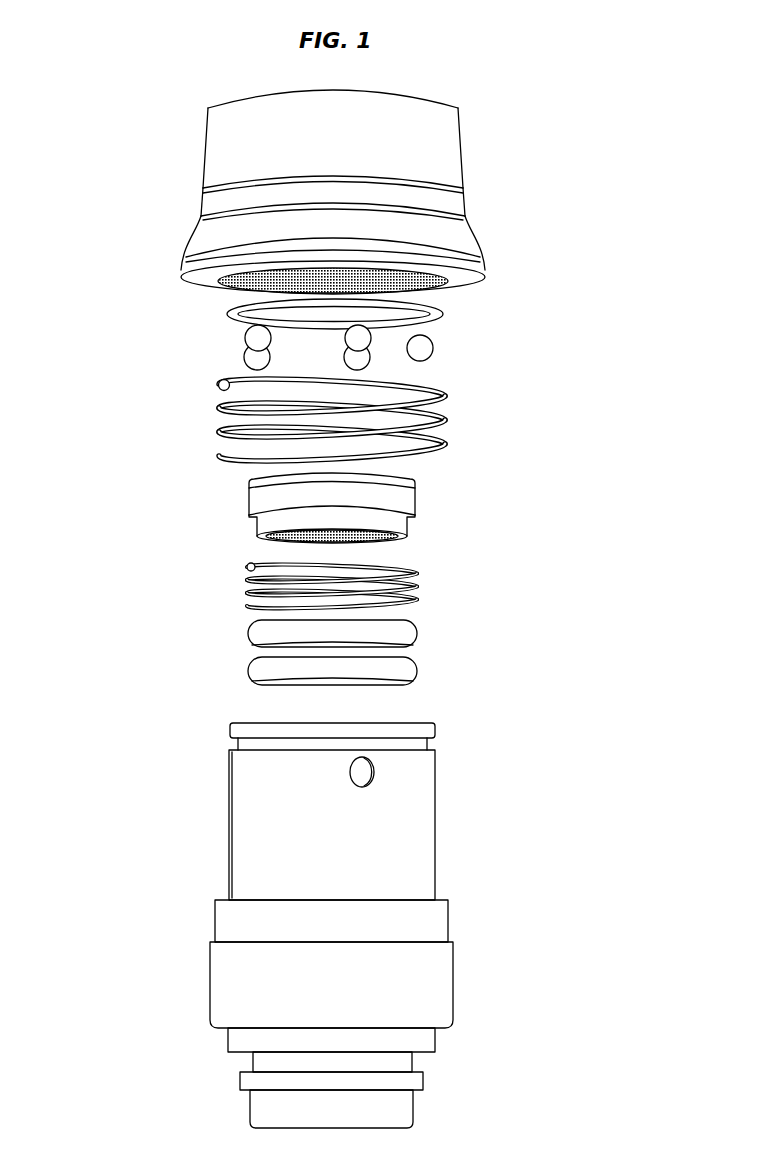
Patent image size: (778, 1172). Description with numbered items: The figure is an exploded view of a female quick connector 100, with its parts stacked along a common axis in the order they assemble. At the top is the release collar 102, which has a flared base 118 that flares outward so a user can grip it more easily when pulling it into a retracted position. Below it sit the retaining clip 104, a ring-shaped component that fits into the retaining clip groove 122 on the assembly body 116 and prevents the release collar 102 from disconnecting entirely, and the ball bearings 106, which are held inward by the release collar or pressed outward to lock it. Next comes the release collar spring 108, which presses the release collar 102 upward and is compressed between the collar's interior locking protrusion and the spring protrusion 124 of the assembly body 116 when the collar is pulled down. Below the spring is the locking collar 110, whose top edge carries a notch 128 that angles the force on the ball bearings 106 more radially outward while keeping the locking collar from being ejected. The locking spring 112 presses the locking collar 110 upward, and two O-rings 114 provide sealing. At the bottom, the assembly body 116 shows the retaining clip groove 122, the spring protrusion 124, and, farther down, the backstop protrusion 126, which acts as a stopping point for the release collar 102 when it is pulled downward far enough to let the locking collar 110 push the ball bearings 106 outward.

The female quick connector 100 is at (578, 242).
The release collar 102 is at (319, 168).
The retaining clip 104 is at (430, 312).
The ball bearings 106 is at (246, 340).
The release collar spring 108 is at (440, 393).
The locking collar 110 is at (327, 508).
The locking spring 112 is at (412, 587).
The O-rings 114 is at (248, 633).
The assembly body 116 is at (331, 811).
The flared base 118 is at (176, 249).
The retaining clip groove 122 is at (237, 744).
The spring protrusion 124 is at (219, 893).
The backstop protrusion 126 is at (454, 939).
The notch 128 is at (412, 483).